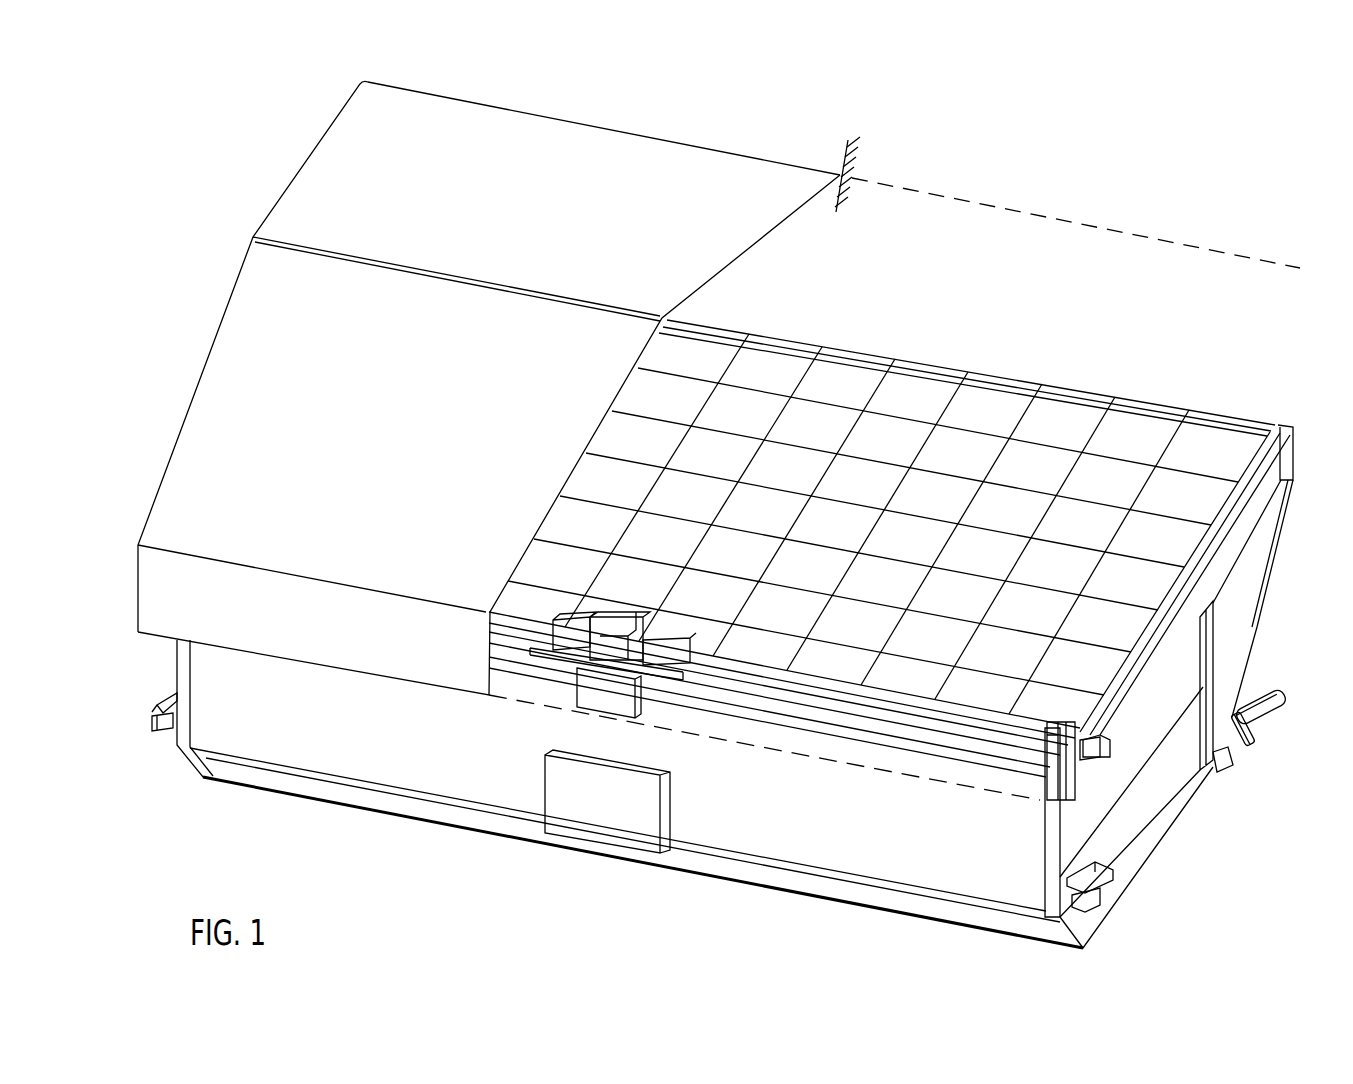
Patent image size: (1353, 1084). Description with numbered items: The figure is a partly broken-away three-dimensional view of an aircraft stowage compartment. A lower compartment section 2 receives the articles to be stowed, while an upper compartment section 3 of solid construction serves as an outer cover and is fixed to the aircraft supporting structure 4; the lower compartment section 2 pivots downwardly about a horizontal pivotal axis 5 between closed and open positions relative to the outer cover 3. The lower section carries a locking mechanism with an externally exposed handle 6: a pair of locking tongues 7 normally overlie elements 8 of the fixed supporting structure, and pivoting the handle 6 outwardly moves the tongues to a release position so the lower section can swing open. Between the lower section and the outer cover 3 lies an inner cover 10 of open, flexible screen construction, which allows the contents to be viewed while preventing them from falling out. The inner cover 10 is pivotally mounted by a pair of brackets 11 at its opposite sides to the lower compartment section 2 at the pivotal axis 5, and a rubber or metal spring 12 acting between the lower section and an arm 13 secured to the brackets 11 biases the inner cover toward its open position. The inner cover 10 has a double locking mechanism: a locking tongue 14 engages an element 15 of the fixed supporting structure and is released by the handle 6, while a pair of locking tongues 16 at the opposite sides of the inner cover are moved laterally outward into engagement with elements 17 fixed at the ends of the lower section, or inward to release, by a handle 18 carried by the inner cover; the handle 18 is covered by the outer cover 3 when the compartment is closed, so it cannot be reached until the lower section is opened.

The lower compartment section 2 is at (317, 762).
The upper compartment section 3 is at (733, 156).
The aircraft supporting structure 4 is at (1282, 697).
The horizontal pivotal axis 5 is at (1243, 746).
The handle 6 is at (550, 828).
The locking tongues 7 is at (170, 692).
The elements of the fixed supporting structure 8 is at (160, 731).
The inner cover 10 is at (840, 410).
The brackets 11 is at (1253, 588).
The spring 12 is at (1206, 680).
The arm 13 is at (1227, 765).
The locking tongue 14 is at (612, 650).
The element of the fixed supporting structure 15 is at (542, 648).
The locking tongues 16 is at (1082, 745).
The elements 17 is at (1068, 779).
The handle 18 is at (577, 690).